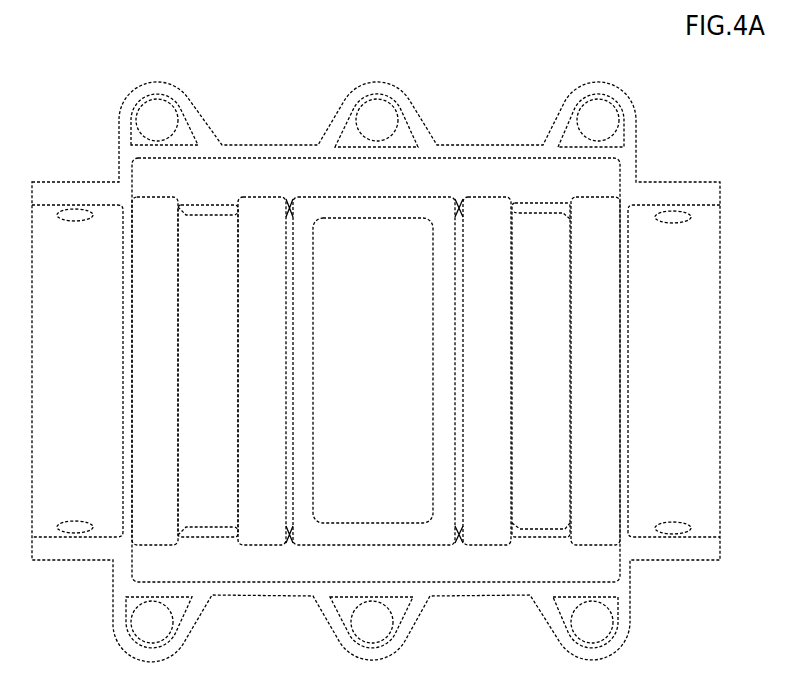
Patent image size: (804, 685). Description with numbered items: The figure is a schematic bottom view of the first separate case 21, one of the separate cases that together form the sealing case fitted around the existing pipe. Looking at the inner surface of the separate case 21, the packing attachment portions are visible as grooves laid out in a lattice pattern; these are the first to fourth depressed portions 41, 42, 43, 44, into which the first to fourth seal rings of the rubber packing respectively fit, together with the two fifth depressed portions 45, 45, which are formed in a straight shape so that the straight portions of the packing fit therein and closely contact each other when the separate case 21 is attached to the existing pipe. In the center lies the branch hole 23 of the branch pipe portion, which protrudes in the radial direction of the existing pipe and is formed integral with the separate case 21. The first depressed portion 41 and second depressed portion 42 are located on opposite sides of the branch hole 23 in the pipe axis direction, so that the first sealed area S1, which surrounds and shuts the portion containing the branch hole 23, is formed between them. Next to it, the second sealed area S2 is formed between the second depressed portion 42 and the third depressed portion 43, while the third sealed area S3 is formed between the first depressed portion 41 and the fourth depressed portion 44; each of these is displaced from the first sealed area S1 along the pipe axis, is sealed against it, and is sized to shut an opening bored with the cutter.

The first separate case 21 is at (632, 102).
The branch hole 23 is at (432, 412).
The first depressed portion 41 is at (268, 412).
The second depressed portion 42 is at (485, 318).
The third depressed portion 43 is at (602, 392).
The fourth depressed portion 44 is at (153, 415).
The fifth depressed portion 45 is at (268, 177).
The first sealed area S1 is at (395, 277).
The second sealed area S2 is at (562, 277).
The third sealed area S3 is at (232, 277).